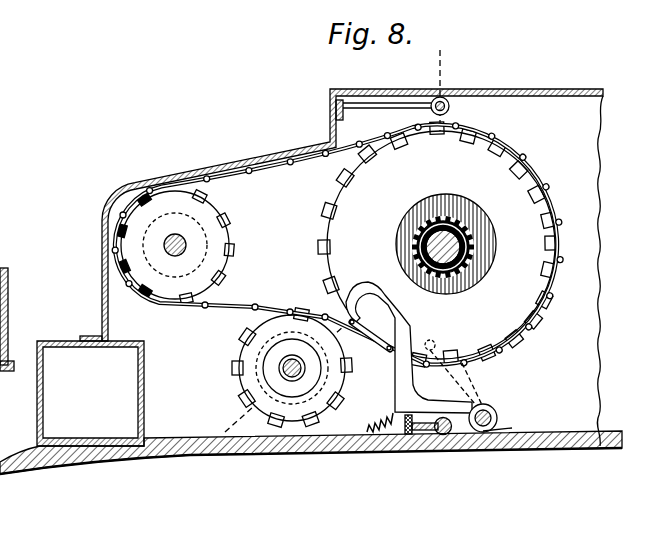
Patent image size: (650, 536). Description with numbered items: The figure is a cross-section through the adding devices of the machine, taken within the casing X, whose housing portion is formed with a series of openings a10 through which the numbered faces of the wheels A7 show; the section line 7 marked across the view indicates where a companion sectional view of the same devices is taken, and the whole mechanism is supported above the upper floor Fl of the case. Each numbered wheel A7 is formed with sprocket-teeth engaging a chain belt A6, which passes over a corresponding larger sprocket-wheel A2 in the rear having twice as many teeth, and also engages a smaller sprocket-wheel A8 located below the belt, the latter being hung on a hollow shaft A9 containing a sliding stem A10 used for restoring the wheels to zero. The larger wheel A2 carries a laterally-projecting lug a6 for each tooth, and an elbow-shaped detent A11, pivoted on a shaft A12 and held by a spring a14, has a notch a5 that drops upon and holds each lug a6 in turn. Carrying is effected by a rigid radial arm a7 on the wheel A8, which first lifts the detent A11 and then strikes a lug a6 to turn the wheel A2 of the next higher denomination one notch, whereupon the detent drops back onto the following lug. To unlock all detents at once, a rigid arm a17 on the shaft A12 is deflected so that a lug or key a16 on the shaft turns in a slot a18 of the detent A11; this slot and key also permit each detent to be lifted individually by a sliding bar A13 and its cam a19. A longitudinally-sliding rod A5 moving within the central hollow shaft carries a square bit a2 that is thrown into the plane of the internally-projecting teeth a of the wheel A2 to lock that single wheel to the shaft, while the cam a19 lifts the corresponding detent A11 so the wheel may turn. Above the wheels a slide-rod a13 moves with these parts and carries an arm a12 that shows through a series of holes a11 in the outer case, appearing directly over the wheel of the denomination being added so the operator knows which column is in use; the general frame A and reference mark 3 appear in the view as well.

The machine frame / casing A is at (276, 95).
The holes in the outer case a11 is at (331, 110).
The arm a12 is at (391, 102).
The slide-rod a13 is at (449, 95).
The openings a10 is at (129, 198).
The numbered wheel A7 is at (175, 245).
The chain belt A6 is at (259, 167).
The laterally-projecting lug a6 is at (436, 138).
The larger sprocket-wheel A2 is at (441, 245).
The square bit a2 is at (458, 214).
The stem A10 is at (438, 226).
The internally-projecting teeth a is at (482, 256).
The longitudinally-sliding rod A5 is at (458, 268).
The notch a5 is at (386, 292).
The sprocket-wheel A8 is at (292, 368).
The hollow shaft A9 is at (308, 366).
The rigid radial arm a7 is at (362, 348).
The rigid arm a17 is at (468, 380).
The elbow-shaped detent A11 is at (420, 400).
The lug or key a16 is at (489, 408).
The slot a18 is at (433, 418).
The shaft A12 is at (497, 419).
The spring a14 is at (373, 425).
The cam a19 is at (403, 434).
The slide-rod A13 is at (458, 448).
The casing X is at (44, 410).
The direction arrow 3 is at (200, 128).
The line 7 7 is at (329, 235).
The upper floor Fl is at (311, 446).